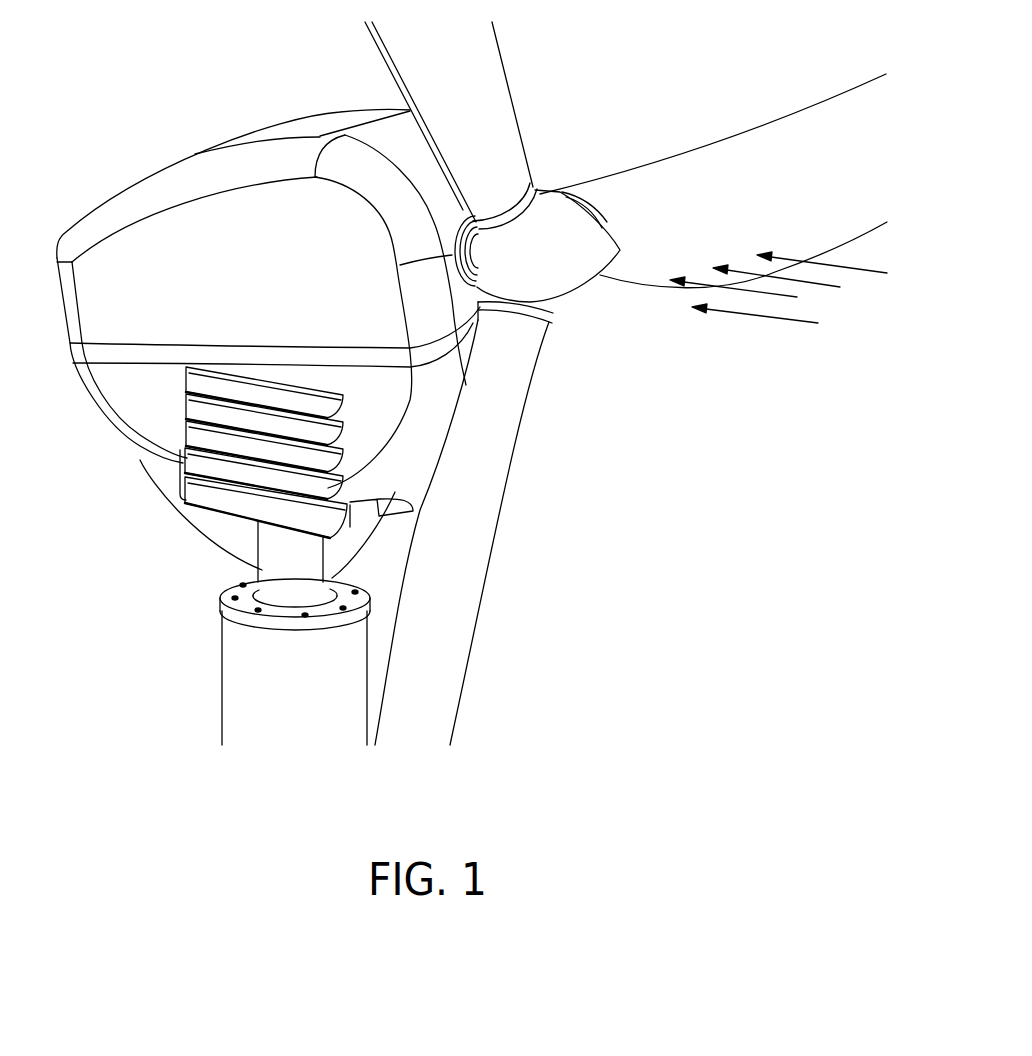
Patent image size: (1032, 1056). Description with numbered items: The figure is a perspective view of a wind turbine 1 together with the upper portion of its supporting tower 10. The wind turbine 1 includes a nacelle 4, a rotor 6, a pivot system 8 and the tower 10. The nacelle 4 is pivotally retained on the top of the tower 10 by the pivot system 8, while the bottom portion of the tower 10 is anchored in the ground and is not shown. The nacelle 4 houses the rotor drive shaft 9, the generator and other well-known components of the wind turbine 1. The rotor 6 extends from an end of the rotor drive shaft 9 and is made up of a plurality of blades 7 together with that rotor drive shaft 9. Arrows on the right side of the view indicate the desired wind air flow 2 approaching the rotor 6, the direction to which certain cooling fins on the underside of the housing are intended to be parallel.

The wind turbine 1 is at (565, 158).
The wind air flow 2 is at (778, 287).
The nacelle 4 is at (185, 234).
The rotor 6 is at (568, 280).
The blades 7 is at (497, 113).
The pivot system 8 is at (220, 573).
The rotor drive shaft 9 is at (457, 232).
The tower 10 is at (240, 652).